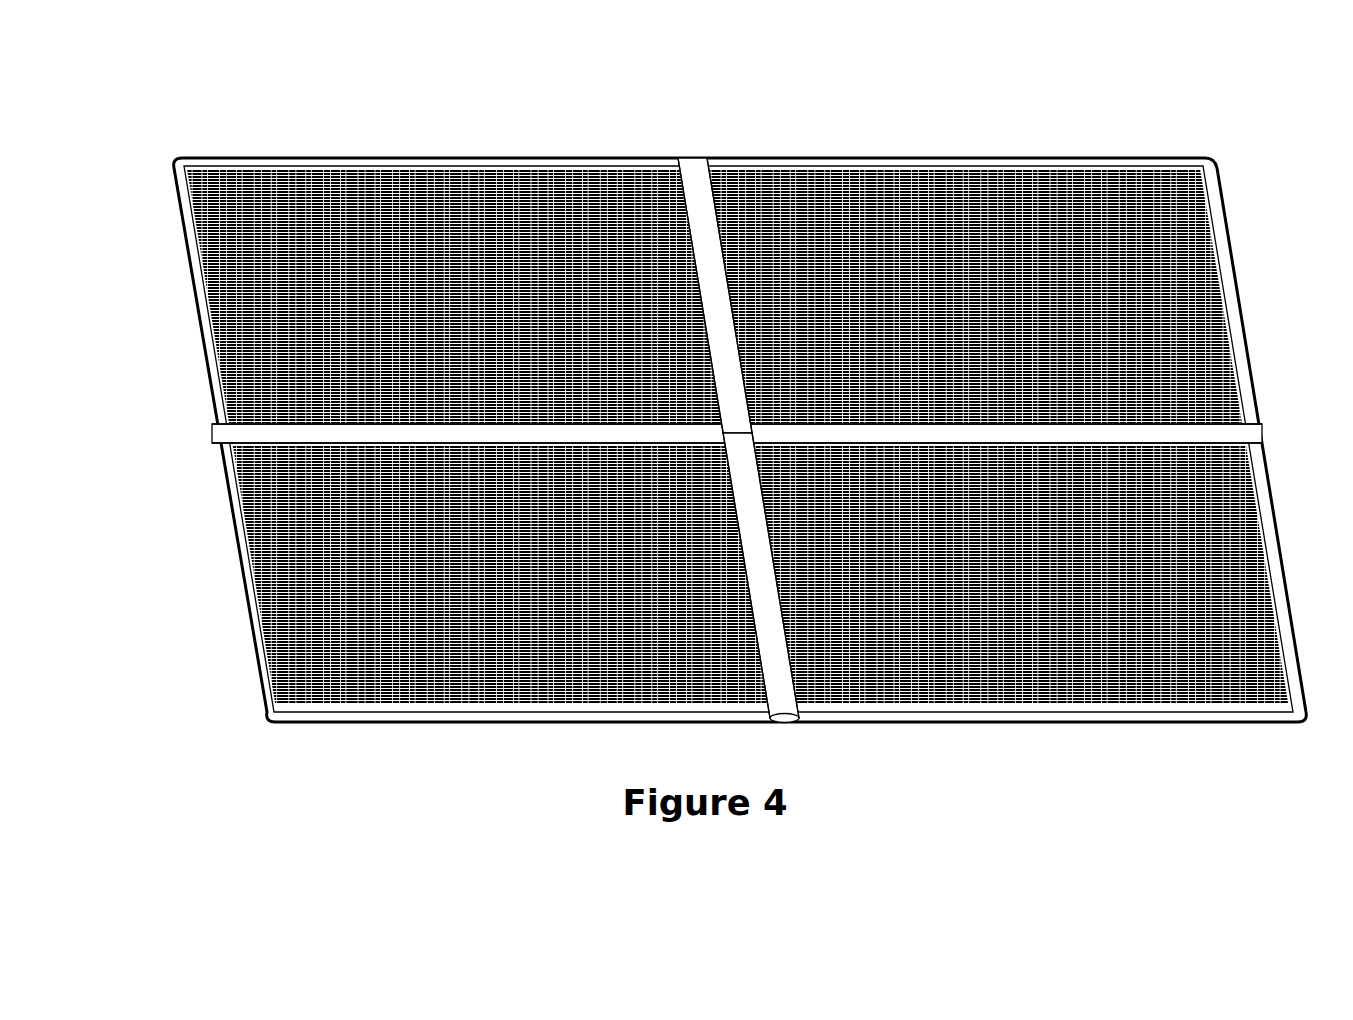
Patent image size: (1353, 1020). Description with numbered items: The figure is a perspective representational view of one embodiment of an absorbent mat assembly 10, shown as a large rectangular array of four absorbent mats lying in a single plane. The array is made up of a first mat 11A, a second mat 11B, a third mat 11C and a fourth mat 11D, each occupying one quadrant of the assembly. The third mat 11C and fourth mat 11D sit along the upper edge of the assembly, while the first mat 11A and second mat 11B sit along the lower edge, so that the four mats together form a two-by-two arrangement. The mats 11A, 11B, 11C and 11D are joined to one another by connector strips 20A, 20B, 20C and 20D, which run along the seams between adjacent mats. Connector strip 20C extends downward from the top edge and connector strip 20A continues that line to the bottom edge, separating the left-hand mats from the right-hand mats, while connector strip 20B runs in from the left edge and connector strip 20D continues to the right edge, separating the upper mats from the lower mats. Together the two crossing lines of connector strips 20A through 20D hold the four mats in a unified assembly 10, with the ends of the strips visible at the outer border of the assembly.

The absorbent mat assembly 10 is at (726, 84).
The first mat 11A is at (494, 722).
The second mat 11B is at (985, 722).
The third mat 11C is at (494, 158).
The fourth mat 11D is at (958, 158).
The connector strip 20A is at (797, 722).
The connector strip 20B is at (214, 430).
The connector strip 20C is at (702, 157).
The connector strip 20D is at (1262, 426).